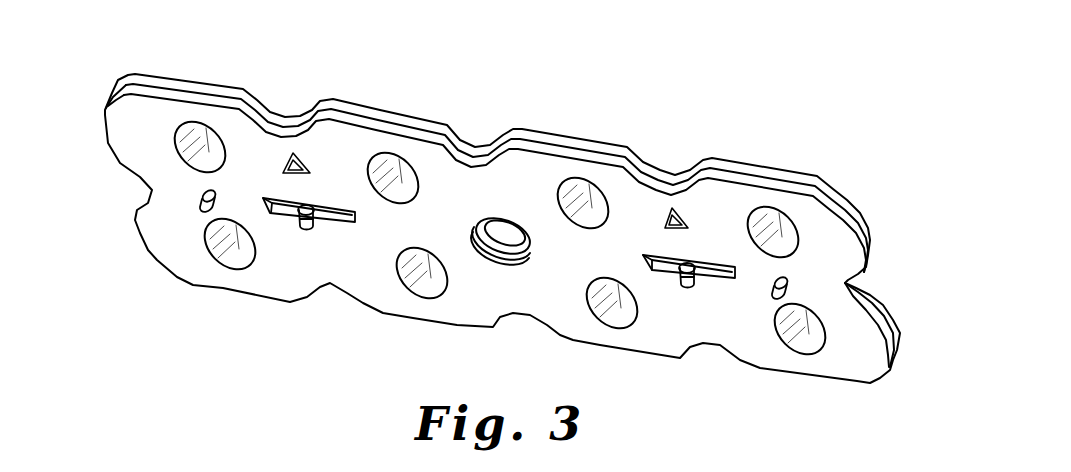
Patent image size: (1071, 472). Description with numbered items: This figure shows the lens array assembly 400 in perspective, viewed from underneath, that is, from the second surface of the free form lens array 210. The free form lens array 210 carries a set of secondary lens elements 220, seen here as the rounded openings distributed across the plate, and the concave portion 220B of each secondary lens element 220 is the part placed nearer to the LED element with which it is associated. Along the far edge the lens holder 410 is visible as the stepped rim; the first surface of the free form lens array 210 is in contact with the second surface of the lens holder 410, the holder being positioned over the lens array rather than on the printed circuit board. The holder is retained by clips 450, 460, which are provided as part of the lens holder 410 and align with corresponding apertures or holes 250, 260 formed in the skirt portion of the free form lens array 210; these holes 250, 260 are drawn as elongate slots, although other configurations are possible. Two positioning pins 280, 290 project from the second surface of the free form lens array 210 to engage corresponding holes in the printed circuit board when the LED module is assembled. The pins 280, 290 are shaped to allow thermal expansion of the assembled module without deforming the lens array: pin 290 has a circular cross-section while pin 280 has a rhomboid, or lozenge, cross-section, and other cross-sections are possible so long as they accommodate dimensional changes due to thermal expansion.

The lens array assembly 400 is at (494, 219).
The free form lens array 210 is at (489, 219).
The lens holder 410 is at (610, 148).
The secondary lens element 220 is at (393, 178).
The concave portion 220B is at (418, 294).
The aperture or hole 250 is at (297, 203).
The aperture or hole 260 is at (713, 266).
The clip 450 is at (303, 228).
The clip 460 is at (695, 288).
The positioning pin 280 is at (198, 212).
The positioning pin 290 is at (780, 295).